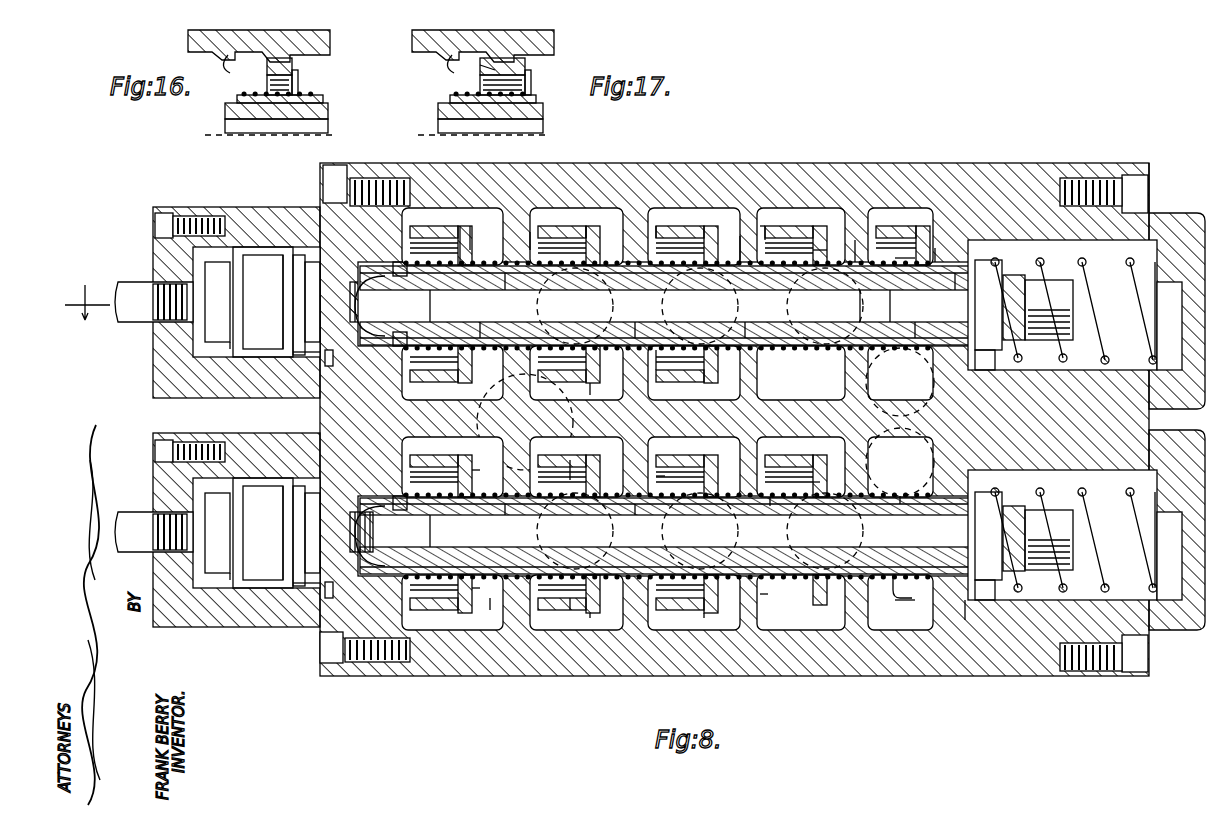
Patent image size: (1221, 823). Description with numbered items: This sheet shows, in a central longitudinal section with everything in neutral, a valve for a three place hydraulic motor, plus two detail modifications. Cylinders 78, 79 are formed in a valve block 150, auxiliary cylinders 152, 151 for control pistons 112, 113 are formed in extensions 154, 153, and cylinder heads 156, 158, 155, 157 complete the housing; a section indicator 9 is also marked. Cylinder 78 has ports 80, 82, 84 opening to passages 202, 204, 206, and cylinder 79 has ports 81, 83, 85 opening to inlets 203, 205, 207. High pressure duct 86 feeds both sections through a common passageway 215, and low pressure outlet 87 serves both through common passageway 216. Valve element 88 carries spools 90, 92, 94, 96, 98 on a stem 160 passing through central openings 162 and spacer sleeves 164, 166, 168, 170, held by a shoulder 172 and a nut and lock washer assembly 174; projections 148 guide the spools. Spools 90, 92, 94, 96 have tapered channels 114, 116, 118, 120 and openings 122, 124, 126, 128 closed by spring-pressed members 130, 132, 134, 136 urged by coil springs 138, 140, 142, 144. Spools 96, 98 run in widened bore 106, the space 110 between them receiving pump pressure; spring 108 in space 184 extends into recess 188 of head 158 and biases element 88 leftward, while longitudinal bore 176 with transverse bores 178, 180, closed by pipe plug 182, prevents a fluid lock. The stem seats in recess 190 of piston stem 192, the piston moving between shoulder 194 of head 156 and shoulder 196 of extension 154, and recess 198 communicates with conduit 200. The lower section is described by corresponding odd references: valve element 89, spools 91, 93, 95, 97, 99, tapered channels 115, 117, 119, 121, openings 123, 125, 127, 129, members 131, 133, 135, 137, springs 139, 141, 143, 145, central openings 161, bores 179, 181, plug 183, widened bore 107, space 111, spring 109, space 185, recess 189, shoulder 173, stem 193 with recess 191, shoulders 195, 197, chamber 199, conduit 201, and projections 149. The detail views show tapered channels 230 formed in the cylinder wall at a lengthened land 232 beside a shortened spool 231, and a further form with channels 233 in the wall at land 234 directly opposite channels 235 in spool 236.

In FIG. 16, the tapered channels 230 is at (272, 58).
In FIG. 16, the spool 231 is at (296, 64).
In FIG. 16, the land 232 is at (230, 70).
In FIG. 16, the cylinder 78 is at (252, 80).
In FIG. 8, the cylinder 78 is at (480, 228).
In FIG. 16, the stem 160 is at (228, 112).
In FIG. 17, the stem 160 is at (440, 112).
In FIG. 8, the stem 160 is at (950, 282).
In FIG. 17, the tapered channels 233 is at (496, 58).
In FIG. 17, the land 234 is at (457, 70).
In FIG. 17, the tapered channels 235 is at (482, 68).
In FIG. 17, the spool 236 is at (530, 64).
In FIG. 8, the valve block 150 is at (700, 178).
In FIG. 8, the extension 154 is at (240, 210).
In FIG. 8, the extension 153 is at (236, 615).
In FIG. 8, the cylinder head 158 is at (1168, 215).
In FIG. 8, the cylinder head 157 is at (1170, 628).
In FIG. 8, the cylinder head 156 is at (192, 210).
In FIG. 8, the cylinder head 155 is at (190, 438).
In FIG. 8, the spool 90 is at (428, 212).
In FIG. 8, the spool 91 is at (452, 605).
In FIG. 8, the valve element 88 is at (1008, 250).
In FIG. 8, the valve element 89 is at (1005, 590).
In FIG. 8, the recess 190 is at (290, 271).
In FIG. 8, the recess 198 is at (195, 285).
In FIG. 8, the auxiliary cylinder 152 is at (310, 248).
In FIG. 8, the fluid piston means 112 is at (265, 247).
In FIG. 8, the threaded pipe plug 182 is at (350, 300).
In FIG. 8, the shoulder 194 is at (230, 342).
In FIG. 8, the stem 192 is at (300, 352).
In FIG. 8, the shoulder 196 is at (328, 358).
In FIG. 8, the fluid conduit 200 is at (132, 286).
In FIG. 8, the section line 9 is at (87, 301).
In FIG. 8, the transverse bore 178 is at (670, 304).
In FIG. 8, the opening 122 is at (400, 262).
In FIG. 8, the nut and lock washer assembly 174 is at (398, 346).
In FIG. 8, the tapered channels 114 is at (452, 236).
In FIG. 8, the projections 148 is at (480, 225).
In FIG. 8, the tapered channels 116 is at (576, 236).
In FIG. 8, the tapered channels 118 is at (694, 236).
In FIG. 8, the tapered channels 120 is at (830, 218).
In FIG. 8, the spring-pressed member 134 is at (775, 240).
In FIG. 8, the opening 128 is at (835, 255).
In FIG. 8, the spring-pressed member 136 is at (900, 236).
In FIG. 8, the space 110 is at (904, 248).
In FIG. 8, the spring-pressed member 130 is at (454, 373).
In FIG. 8, the opening 124 is at (576, 375).
In FIG. 8, the spring-pressed member 132 is at (602, 393).
In FIG. 8, the opening 126 is at (694, 374).
In FIG. 8, the coil spring 140 is at (645, 348).
In FIG. 8, the coil spring 142 is at (788, 349).
In FIG. 8, the common passageway 215 is at (898, 420).
In FIG. 8, the common passageway 216 is at (470, 420).
In FIG. 8, the central openings 162 is at (447, 306).
In FIG. 8, the spacer sleeve 164 is at (478, 332).
In FIG. 8, the coil spring 138 is at (506, 280).
In FIG. 8, the passage 202 is at (575, 306).
In FIG. 8, the spacer sleeve 166 is at (632, 332).
In FIG. 8, the passage 204 is at (700, 306).
In FIG. 8, the spacer sleeve 168 is at (742, 332).
In FIG. 8, the passage 206 is at (825, 306).
In FIG. 8, the longitudinal bore 176 is at (862, 306).
In FIG. 8, the coil spring 144 is at (892, 306).
In FIG. 8, the spacer sleeve 170 is at (915, 332).
In FIG. 8, the widened bore 106 is at (1035, 251).
In FIG. 8, the transverse bore 180 is at (985, 260).
In FIG. 8, the space 184 is at (1038, 307).
In FIG. 8, the spring 108 is at (1118, 298).
In FIG. 8, the recess 188 is at (1130, 368).
In FIG. 8, the shoulder 172 is at (995, 350).
In FIG. 8, the spool 98 is at (940, 250).
In FIG. 8, the spool 96 is at (857, 240).
In FIG. 8, the port 84 is at (770, 225).
In FIG. 8, the spool 94 is at (722, 245).
In FIG. 8, the port 82 is at (660, 228).
In FIG. 8, the spool 92 is at (590, 232).
In FIG. 8, the port 80 is at (527, 240).
In FIG. 8, the lower valve spool 179 is at (670, 536).
In FIG. 8, the seal ring 123 is at (400, 496).
In FIG. 8, the threaded stem 183 is at (350, 530).
In FIG. 8, the actuator housing 191 is at (290, 496).
In FIG. 8, the chamber 199 is at (200, 508).
In FIG. 8, the auxiliary cylinder 151 is at (310, 480).
In FIG. 8, the fluid piston means 113 is at (250, 478).
In FIG. 8, the retainer 195 is at (230, 569).
In FIG. 8, the washer 193 is at (300, 582).
In FIG. 8, the pin 197 is at (330, 598).
In FIG. 8, the fluid conduit 201 is at (138, 540).
In FIG. 8, the tapered channels 115 is at (452, 466).
In FIG. 8, the low pressure outlet 87 is at (486, 463).
In FIG. 8, the tapered channels 117 is at (576, 466).
In FIG. 8, the sleeve land 125 is at (572, 478).
In FIG. 8, the tapered channels 119 is at (700, 460).
In FIG. 8, the groove 127 is at (680, 478).
In FIG. 8, the tapered channels 121 is at (828, 460).
In FIG. 8, the groove 129 is at (835, 482).
In FIG. 8, the spool land 143 is at (773, 498).
In FIG. 8, the high pressure duct 86 is at (902, 437).
In FIG. 8, the spool land 161 is at (447, 531).
In FIG. 8, the spool land 139 is at (505, 508).
In FIG. 8, the inlet 203 is at (575, 531).
In FIG. 8, the spool groove 141 is at (640, 508).
In FIG. 8, the inlet 205 is at (700, 531).
In FIG. 8, the inlet 207 is at (825, 531).
In FIG. 8, the spool land 145 is at (900, 500).
In FIG. 8, the piston 181 is at (985, 534).
In FIG. 8, the widened bore 107 is at (1040, 458).
In FIG. 8, the spring retainer 185 is at (1024, 536).
In FIG. 8, the spring 109 is at (1118, 531).
In FIG. 8, the spring seat 189 is at (1130, 598).
In FIG. 8, the seal 173 is at (994, 582).
In FIG. 8, the port chamber 149 is at (452, 603).
In FIG. 8, the port 131 is at (491, 583).
In FIG. 8, the port 81 is at (576, 602).
In FIG. 8, the sleeve land 133 is at (602, 619).
In FIG. 8, the port 83 is at (694, 602).
In FIG. 8, the spool 95 is at (699, 619).
In FIG. 8, the port 85 is at (801, 603).
In FIG. 8, the sleeve 135 is at (777, 593).
In FIG. 8, the spool 97 is at (835, 602).
In FIG. 8, the spring-pressed member 137 is at (900, 602).
In FIG. 8, the space 111 is at (907, 593).
In FIG. 8, the cylinder 79 is at (490, 612).
In FIG. 8, the spool 93 is at (578, 612).
In FIG. 8, the spool 99 is at (968, 622).